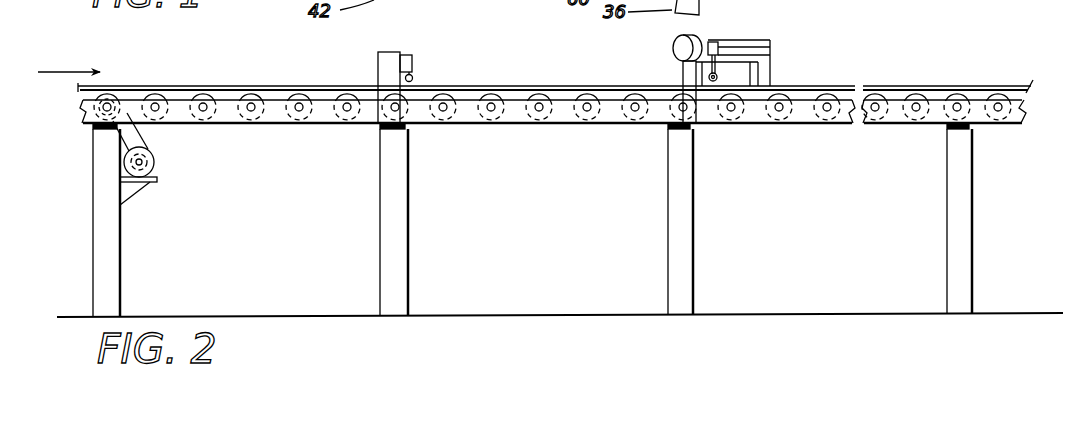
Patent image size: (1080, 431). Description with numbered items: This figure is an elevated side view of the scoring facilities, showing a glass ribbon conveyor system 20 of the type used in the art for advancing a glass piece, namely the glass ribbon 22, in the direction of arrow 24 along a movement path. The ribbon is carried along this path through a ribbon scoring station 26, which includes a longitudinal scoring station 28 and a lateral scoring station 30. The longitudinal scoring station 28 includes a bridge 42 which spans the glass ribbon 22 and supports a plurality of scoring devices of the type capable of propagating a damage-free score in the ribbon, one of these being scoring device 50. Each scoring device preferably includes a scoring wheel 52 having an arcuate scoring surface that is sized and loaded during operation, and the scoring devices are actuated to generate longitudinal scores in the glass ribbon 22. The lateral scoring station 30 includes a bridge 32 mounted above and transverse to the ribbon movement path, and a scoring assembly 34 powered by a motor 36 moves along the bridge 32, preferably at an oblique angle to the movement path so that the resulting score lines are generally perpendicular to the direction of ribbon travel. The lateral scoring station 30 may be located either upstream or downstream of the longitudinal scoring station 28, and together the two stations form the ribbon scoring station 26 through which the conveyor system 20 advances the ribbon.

The glass ribbon conveyor system 20 is at (748, 152).
The glass ribbon 22 is at (838, 82).
The arrow 24 is at (68, 72).
The ribbon scoring station 26 is at (321, 173).
The longitudinal scoring station 28 is at (425, 60).
The lateral scoring station 30 is at (760, 36).
The bridge 32 is at (765, 43).
The scoring assembly 34 is at (716, 42).
The motor 36 is at (678, 50).
The bridge 42 is at (378, 52).
The scoring device 50 is at (413, 50).
The scoring wheel 52 is at (414, 80).